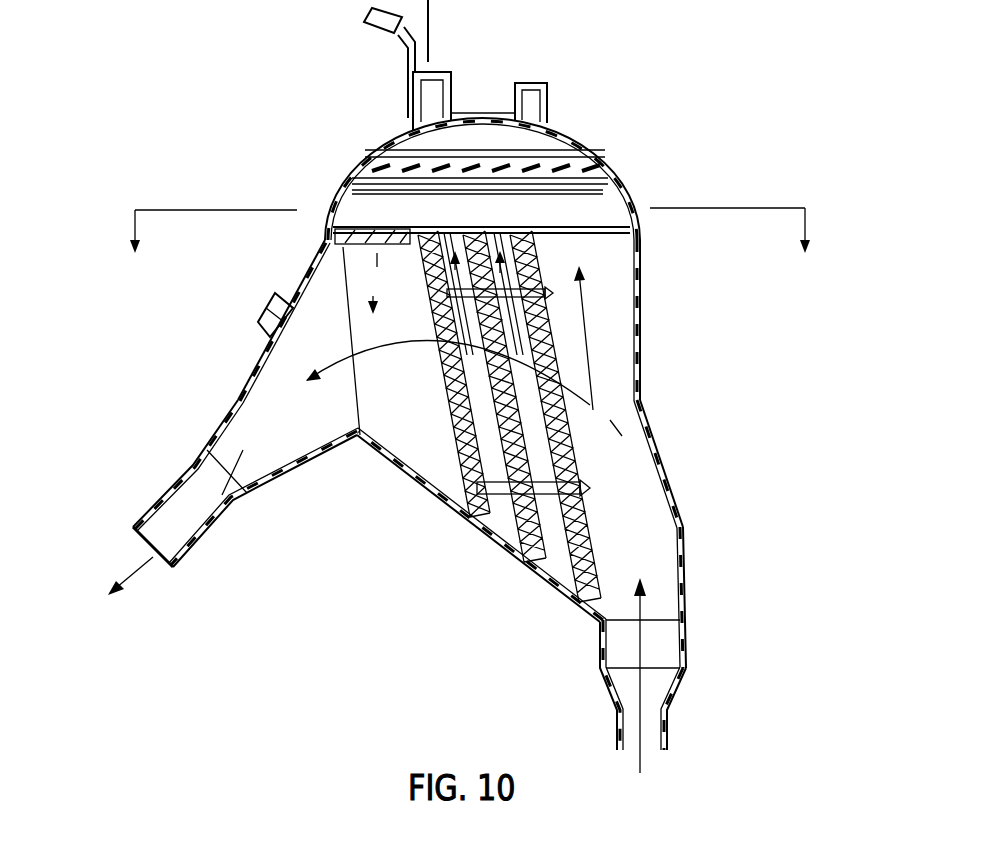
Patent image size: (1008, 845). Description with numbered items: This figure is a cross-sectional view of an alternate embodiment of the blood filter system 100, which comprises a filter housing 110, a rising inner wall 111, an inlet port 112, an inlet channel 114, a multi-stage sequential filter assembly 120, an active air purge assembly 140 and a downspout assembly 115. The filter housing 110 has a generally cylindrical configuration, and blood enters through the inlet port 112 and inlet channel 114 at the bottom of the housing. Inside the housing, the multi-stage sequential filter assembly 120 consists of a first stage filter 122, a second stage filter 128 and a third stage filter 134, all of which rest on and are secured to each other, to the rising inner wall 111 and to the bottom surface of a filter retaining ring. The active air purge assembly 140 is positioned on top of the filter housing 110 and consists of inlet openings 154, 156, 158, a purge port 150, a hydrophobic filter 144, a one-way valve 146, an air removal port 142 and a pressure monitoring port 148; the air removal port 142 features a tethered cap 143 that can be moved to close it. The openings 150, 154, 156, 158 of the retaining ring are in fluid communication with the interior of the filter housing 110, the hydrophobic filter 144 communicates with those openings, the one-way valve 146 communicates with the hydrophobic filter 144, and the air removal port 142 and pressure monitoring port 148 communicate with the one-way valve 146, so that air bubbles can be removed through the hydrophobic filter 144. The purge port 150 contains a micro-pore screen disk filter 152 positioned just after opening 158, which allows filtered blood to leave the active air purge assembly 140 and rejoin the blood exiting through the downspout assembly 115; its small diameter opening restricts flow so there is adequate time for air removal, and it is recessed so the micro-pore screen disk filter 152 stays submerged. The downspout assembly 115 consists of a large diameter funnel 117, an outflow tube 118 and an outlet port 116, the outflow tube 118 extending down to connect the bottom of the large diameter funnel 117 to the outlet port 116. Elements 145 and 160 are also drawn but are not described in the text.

The blood filter system 100 is at (247, 43).
The filter housing 110 is at (640, 338).
The rising inner wall 111 is at (410, 482).
The inlet port 112 is at (650, 758).
The inlet channel 114 is at (688, 633).
The downspout assembly 115 is at (183, 430).
The outlet port 116 is at (150, 556).
The large diameter funnel 117 is at (263, 353).
The outflow tube 118 is at (173, 493).
The multi-stage sequential filter assembly 120 is at (593, 452).
The first stage filter 122 is at (585, 556).
The second stage filter 128 is at (520, 547).
The third stage filter 134 is at (447, 428).
The active air purge assembly 140 is at (590, 130).
The air removal port 142 is at (430, 66).
The tethered cap 143 is at (363, 13).
The hydrophobic filter 144 is at (365, 173).
The seal layer 145 is at (607, 168).
The one-way valve 146 is at (478, 158).
The pressure monitoring port 148 is at (530, 83).
The purge port 150 is at (330, 263).
The micro-pore screen disk filter 152 is at (355, 222).
The inlet opening 154 is at (603, 272).
The inlet opening 156 is at (500, 228).
The inlet opening 158 is at (457, 228).
The side fitting 160 is at (263, 307).